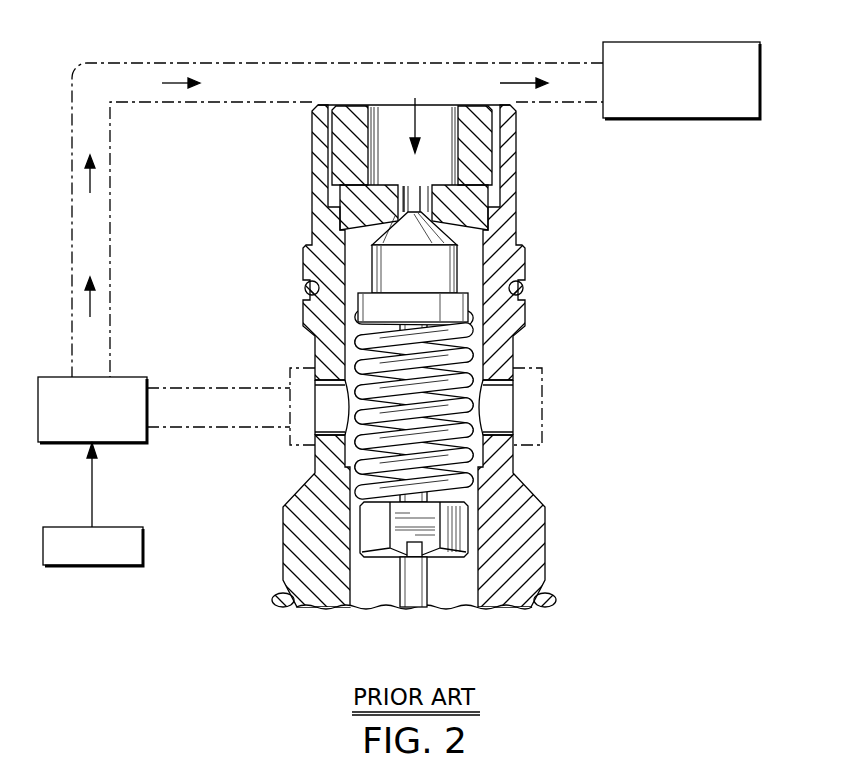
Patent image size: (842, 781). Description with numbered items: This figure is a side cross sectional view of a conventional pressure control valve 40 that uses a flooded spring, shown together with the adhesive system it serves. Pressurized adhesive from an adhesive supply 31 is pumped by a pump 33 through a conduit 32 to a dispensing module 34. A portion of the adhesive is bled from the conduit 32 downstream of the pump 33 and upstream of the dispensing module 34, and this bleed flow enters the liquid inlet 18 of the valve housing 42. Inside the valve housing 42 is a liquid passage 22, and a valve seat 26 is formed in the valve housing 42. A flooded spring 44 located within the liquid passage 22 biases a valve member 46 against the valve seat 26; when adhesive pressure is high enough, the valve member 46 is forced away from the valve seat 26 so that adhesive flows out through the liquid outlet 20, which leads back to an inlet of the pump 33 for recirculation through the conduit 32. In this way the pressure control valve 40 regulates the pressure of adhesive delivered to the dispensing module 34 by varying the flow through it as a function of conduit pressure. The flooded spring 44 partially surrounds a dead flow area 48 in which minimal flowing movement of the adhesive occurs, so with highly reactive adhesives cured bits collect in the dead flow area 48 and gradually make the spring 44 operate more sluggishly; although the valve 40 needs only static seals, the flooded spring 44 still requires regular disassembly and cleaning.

The liquid inlet 18 is at (460, 138).
The liquid outlet 20 is at (320, 417).
The liquid passage 22 is at (485, 246).
The valve seat 26 is at (400, 218).
The adhesive supply 31 is at (58, 527).
The conduit 32 is at (167, 62).
The pump 33 is at (54, 377).
The dispensing module 34 is at (760, 70).
The pressure control valve 40 is at (624, 198).
The valve housing 42 is at (517, 488).
The flooded spring 44 is at (470, 355).
The valve member 46 is at (383, 255).
The dead flow area 48 is at (377, 353).